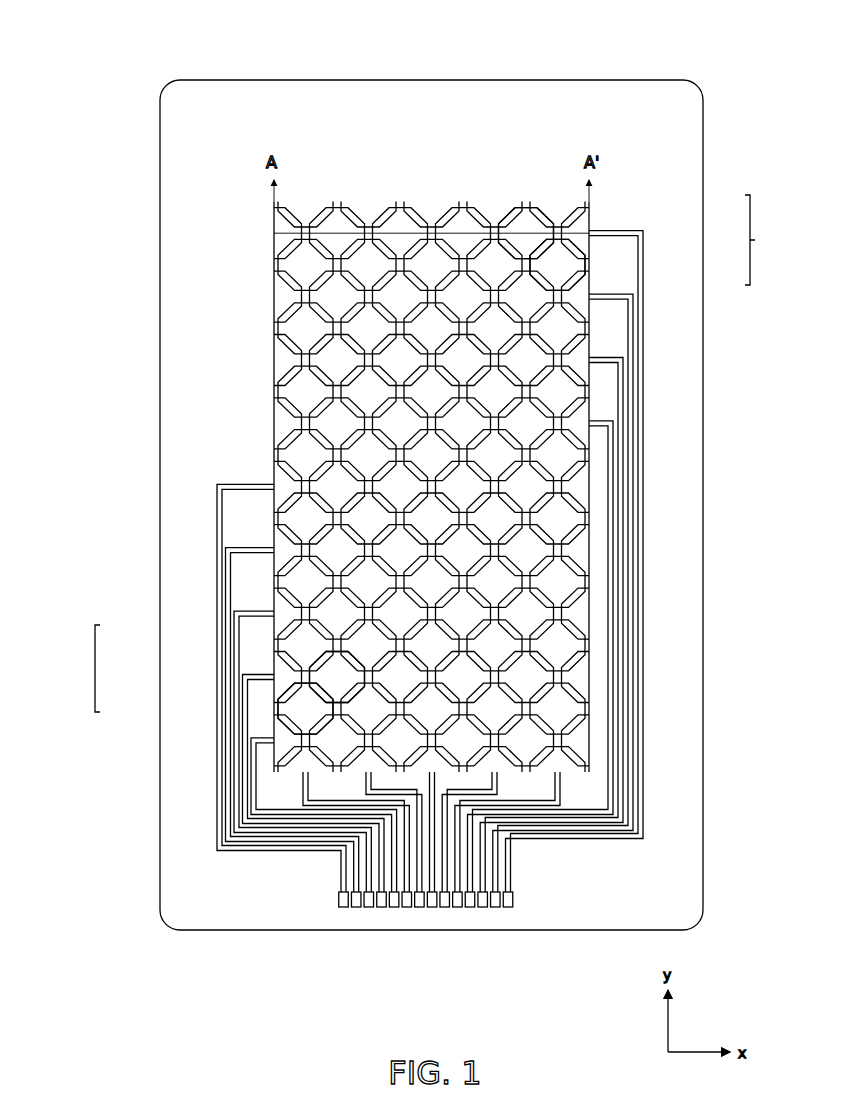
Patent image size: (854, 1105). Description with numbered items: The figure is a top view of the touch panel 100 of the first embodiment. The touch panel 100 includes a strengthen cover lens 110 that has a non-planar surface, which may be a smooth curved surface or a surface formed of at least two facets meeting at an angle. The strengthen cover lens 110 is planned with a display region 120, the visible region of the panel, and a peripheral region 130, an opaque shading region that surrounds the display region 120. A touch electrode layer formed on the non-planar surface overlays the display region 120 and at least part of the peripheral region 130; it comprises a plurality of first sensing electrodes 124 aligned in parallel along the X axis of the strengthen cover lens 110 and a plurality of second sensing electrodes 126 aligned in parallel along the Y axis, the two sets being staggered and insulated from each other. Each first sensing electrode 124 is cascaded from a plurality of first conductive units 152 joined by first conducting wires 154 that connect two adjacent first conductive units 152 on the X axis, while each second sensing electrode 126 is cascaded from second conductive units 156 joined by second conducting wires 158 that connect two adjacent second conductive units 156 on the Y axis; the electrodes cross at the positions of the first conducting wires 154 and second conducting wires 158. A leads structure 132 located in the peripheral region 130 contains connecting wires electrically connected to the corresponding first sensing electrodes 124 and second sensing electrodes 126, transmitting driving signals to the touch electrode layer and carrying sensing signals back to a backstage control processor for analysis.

The touch panel 100 is at (138, 62).
The strengthen cover lens 110 is at (523, 80).
The display region 120 is at (282, 325).
The first sensing electrodes 124 is at (645, 242).
The second sensing electrodes 126 is at (208, 679).
The peripheral region 130 is at (182, 233).
The leads structure 132 is at (218, 518).
The first conductive units 152 is at (575, 263).
The first conducting wires 154 is at (598, 232).
The second conductive units 156 is at (302, 718).
The second conducting wires 158 is at (302, 666).